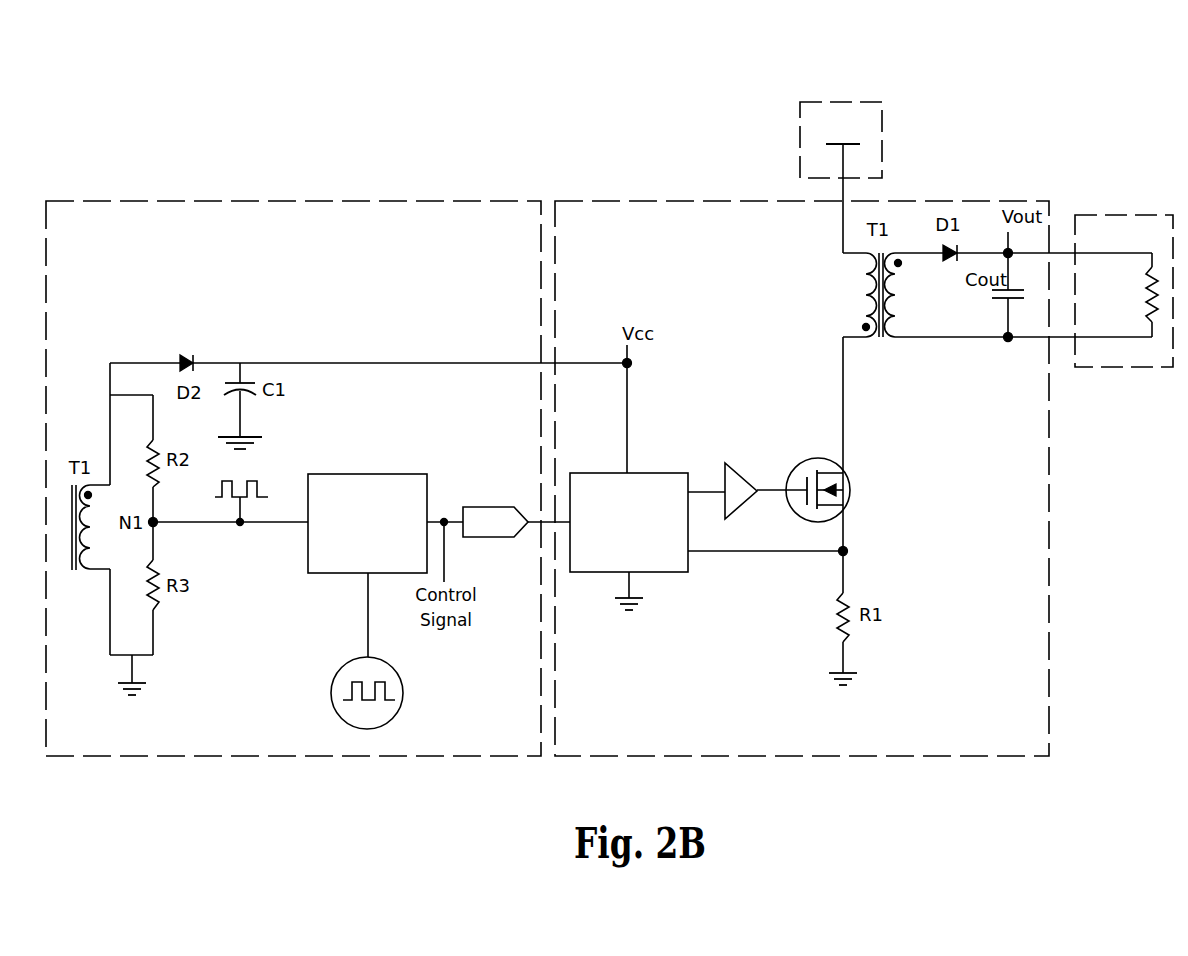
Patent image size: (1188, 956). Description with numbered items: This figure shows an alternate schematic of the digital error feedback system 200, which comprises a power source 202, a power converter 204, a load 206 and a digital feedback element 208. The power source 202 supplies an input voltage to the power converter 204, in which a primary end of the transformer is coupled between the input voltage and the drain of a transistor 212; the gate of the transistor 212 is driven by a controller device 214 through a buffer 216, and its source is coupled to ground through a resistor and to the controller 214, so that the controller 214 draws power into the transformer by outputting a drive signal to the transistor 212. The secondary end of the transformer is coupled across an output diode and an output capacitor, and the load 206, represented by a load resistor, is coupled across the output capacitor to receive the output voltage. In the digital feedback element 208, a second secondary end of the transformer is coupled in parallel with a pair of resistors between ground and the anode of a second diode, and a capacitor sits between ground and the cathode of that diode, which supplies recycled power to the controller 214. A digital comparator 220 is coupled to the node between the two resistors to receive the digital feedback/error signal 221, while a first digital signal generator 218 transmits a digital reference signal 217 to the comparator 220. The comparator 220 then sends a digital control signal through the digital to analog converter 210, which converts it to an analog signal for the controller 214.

The digital error feedback system 200 is at (1082, 78).
The power source 202 is at (852, 101).
The power converter 204 is at (979, 199).
The load 206 is at (1122, 214).
The digital feedback element 208 is at (425, 200).
The digital to analog converter 210 is at (483, 507).
The transistor 212 is at (800, 459).
The controller device 214 is at (672, 473).
The buffer 216 is at (745, 463).
The digital reference signal 217 is at (367, 700).
The first digital signal generator 218 is at (339, 673).
The digital comparator 220 is at (412, 474).
The digital feedback/error signal 221 is at (251, 480).